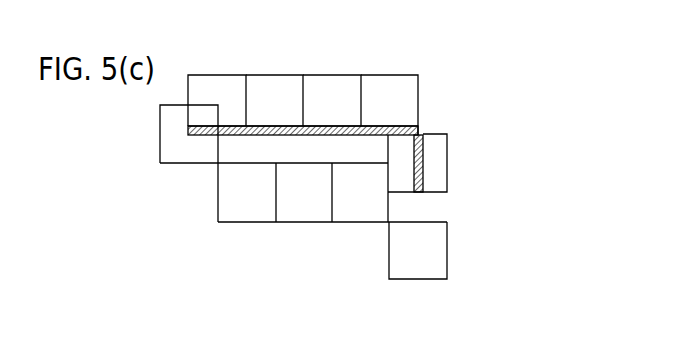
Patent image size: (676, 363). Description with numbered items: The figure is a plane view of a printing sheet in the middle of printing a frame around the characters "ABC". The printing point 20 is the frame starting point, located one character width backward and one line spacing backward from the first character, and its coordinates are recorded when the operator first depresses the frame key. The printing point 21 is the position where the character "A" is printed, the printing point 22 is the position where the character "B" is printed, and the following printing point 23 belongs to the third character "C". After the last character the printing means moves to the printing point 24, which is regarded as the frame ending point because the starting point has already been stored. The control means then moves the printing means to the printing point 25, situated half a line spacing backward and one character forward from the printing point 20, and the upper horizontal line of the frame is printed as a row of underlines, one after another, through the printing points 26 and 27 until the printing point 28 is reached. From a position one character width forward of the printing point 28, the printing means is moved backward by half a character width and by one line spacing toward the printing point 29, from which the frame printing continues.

The printing point 20 is at (160, 163).
The printing point 21 is at (250, 222).
The printing point 22 is at (298, 222).
The character C 23 is at (363, 222).
The printing point 24 is at (447, 220).
The printing point 25 is at (229, 73).
The second segment 26 is at (284, 74).
The third segment 27 is at (348, 74).
The printing point 28 is at (377, 74).
The printing point 29 is at (442, 132).